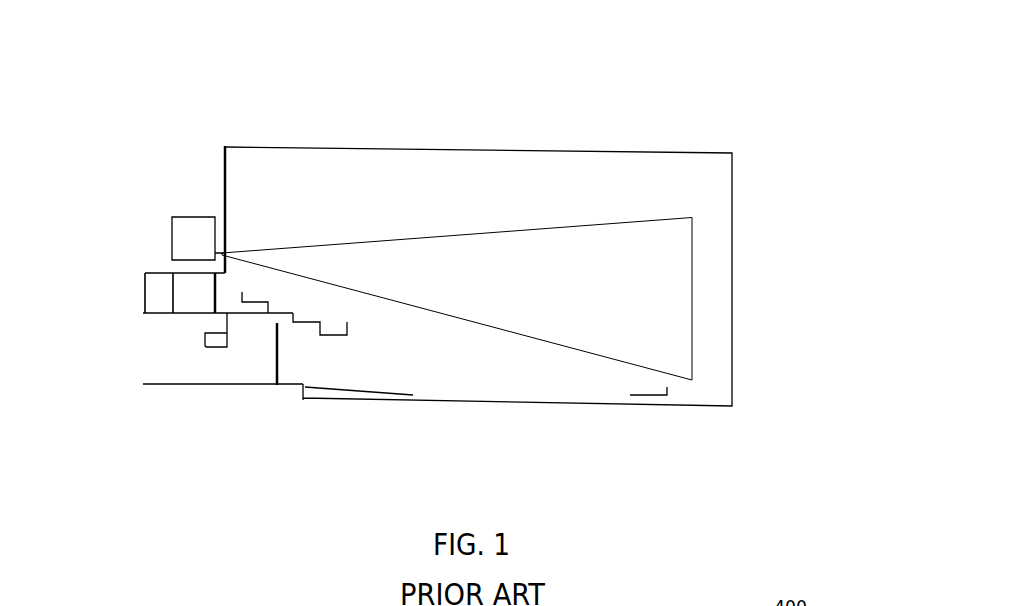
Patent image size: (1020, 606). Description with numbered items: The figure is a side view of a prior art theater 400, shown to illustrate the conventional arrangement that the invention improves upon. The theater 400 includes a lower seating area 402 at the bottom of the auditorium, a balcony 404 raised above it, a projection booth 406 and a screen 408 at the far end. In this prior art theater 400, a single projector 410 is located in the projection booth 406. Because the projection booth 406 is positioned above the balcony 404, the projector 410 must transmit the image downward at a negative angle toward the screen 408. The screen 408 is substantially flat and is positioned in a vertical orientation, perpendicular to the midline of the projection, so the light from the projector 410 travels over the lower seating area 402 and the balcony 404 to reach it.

The theater 400 is at (784, 315).
The lower seating area 402 is at (402, 355).
The balcony 404 is at (248, 302).
The projection booth 406 is at (224, 215).
The screen 408 is at (697, 252).
The projector 410 is at (172, 217).